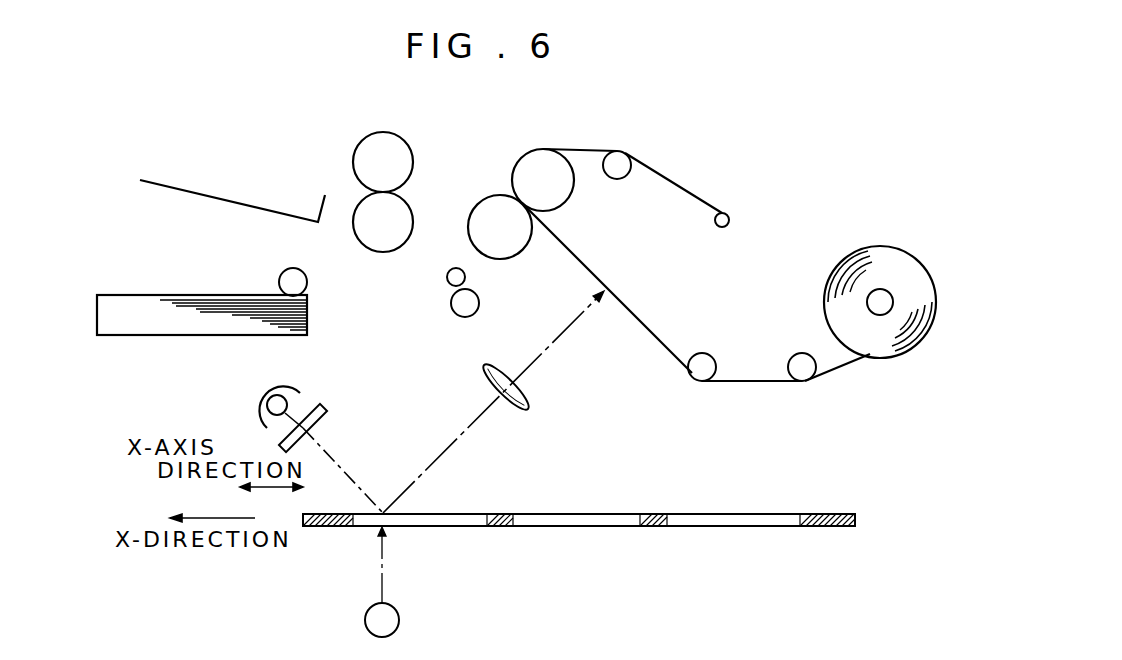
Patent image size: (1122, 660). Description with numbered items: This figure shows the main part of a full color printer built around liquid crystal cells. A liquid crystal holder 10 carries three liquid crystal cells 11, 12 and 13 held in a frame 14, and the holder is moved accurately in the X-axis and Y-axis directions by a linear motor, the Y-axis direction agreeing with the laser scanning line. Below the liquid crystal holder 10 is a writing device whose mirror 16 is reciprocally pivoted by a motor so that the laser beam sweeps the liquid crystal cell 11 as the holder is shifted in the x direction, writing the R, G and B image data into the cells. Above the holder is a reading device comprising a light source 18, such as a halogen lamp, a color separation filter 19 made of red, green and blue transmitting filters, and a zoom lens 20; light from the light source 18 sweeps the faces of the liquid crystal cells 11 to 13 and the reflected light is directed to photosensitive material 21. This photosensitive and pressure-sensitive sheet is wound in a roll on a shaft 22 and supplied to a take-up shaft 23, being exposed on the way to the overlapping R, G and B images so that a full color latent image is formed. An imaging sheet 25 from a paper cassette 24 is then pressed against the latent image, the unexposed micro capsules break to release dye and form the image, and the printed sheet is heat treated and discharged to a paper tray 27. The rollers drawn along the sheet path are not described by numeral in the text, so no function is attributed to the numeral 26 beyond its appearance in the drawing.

The liquid crystal holder 10 is at (683, 528).
The liquid crystal cell 11 is at (462, 513).
The liquid crystal cell 12 is at (592, 513).
The liquid crystal cell 13 is at (758, 513).
The frame 14 is at (828, 513).
The mirror 16 is at (398, 606).
The light source 18 is at (290, 395).
The color separation filter 19 is at (324, 409).
The zoom lens 20 is at (505, 370).
The photosensitive material 21 is at (655, 346).
The shaft 22 is at (826, 300).
The take-up shaft 23 is at (730, 216).
The paper cassette 24 is at (148, 345).
The imaging sheet 25 is at (217, 294).
The feed rollers 26 is at (575, 192).
The paper tray 27 is at (155, 185).